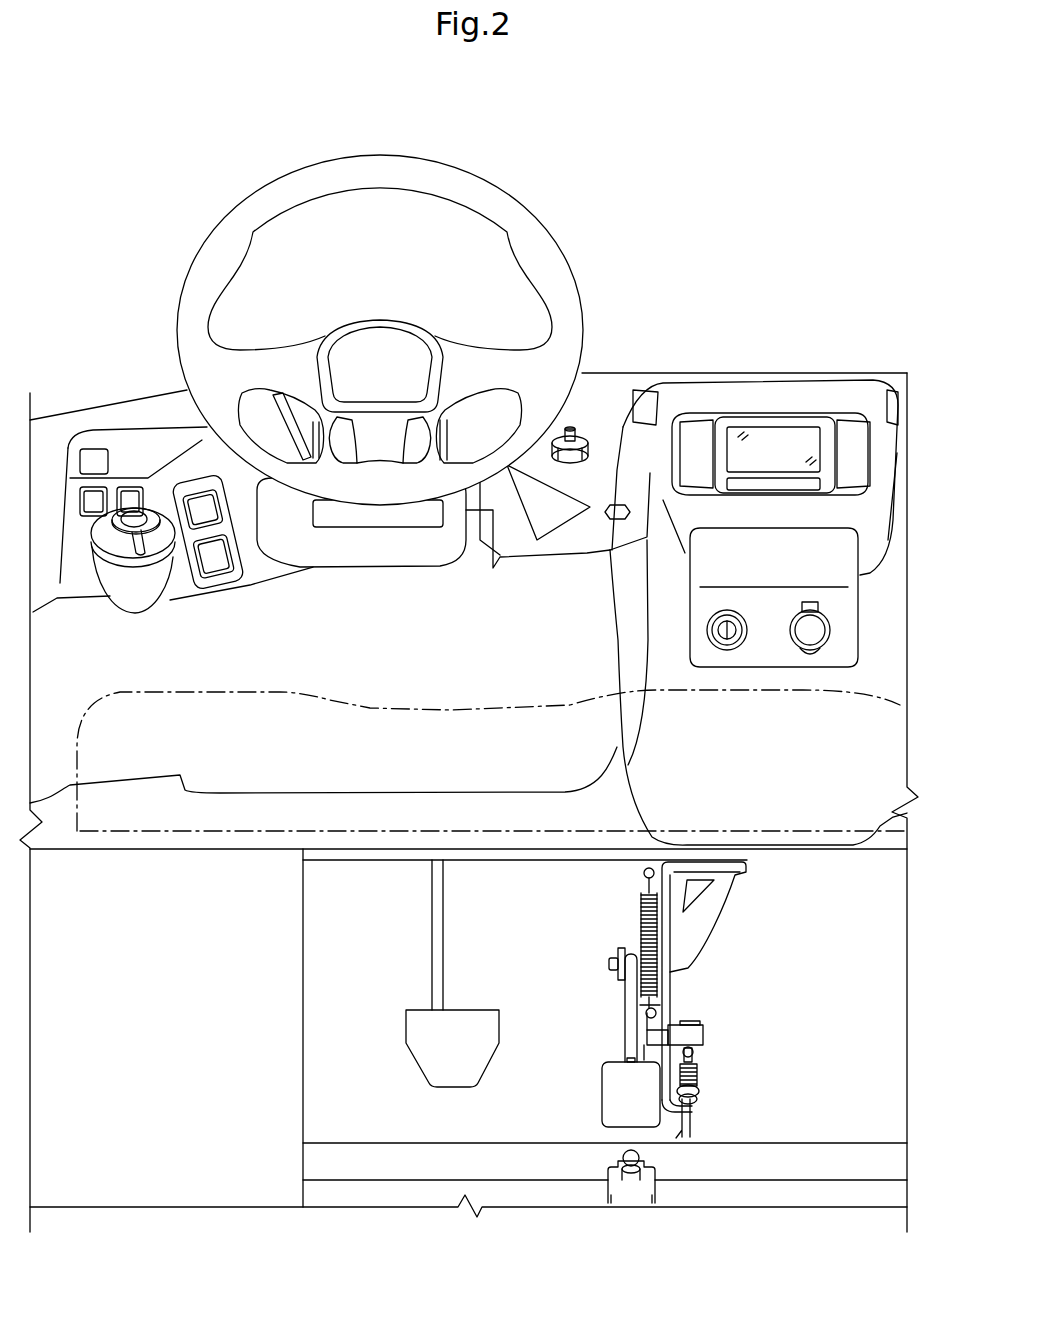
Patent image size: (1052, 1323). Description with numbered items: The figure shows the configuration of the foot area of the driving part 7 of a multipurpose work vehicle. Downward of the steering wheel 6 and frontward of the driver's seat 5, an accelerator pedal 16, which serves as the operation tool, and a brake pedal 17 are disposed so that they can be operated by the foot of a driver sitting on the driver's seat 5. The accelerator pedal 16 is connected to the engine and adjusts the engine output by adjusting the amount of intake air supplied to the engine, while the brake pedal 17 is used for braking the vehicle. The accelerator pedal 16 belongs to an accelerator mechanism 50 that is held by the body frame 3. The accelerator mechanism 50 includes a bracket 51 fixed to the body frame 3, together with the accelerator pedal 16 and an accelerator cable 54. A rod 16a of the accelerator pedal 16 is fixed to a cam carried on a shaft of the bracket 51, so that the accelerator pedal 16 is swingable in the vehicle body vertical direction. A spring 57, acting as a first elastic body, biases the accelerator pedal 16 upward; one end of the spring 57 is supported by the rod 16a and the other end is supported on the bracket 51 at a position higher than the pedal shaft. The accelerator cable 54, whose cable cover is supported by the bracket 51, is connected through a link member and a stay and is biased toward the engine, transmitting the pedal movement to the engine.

The driving part 7 is at (128, 220).
The steering wheel 6 is at (428, 172).
The driver's seat 5 is at (452, 710).
The body frame 3 is at (483, 858).
The brake pedal 17 is at (420, 1055).
The accelerator mechanism 50 is at (705, 983).
The bracket 51 is at (668, 1007).
The spring 57 is at (640, 922).
The accelerator pedal 16 is at (612, 1097).
The rod 16a is at (620, 1028).
The accelerator cable 54 is at (690, 1117).